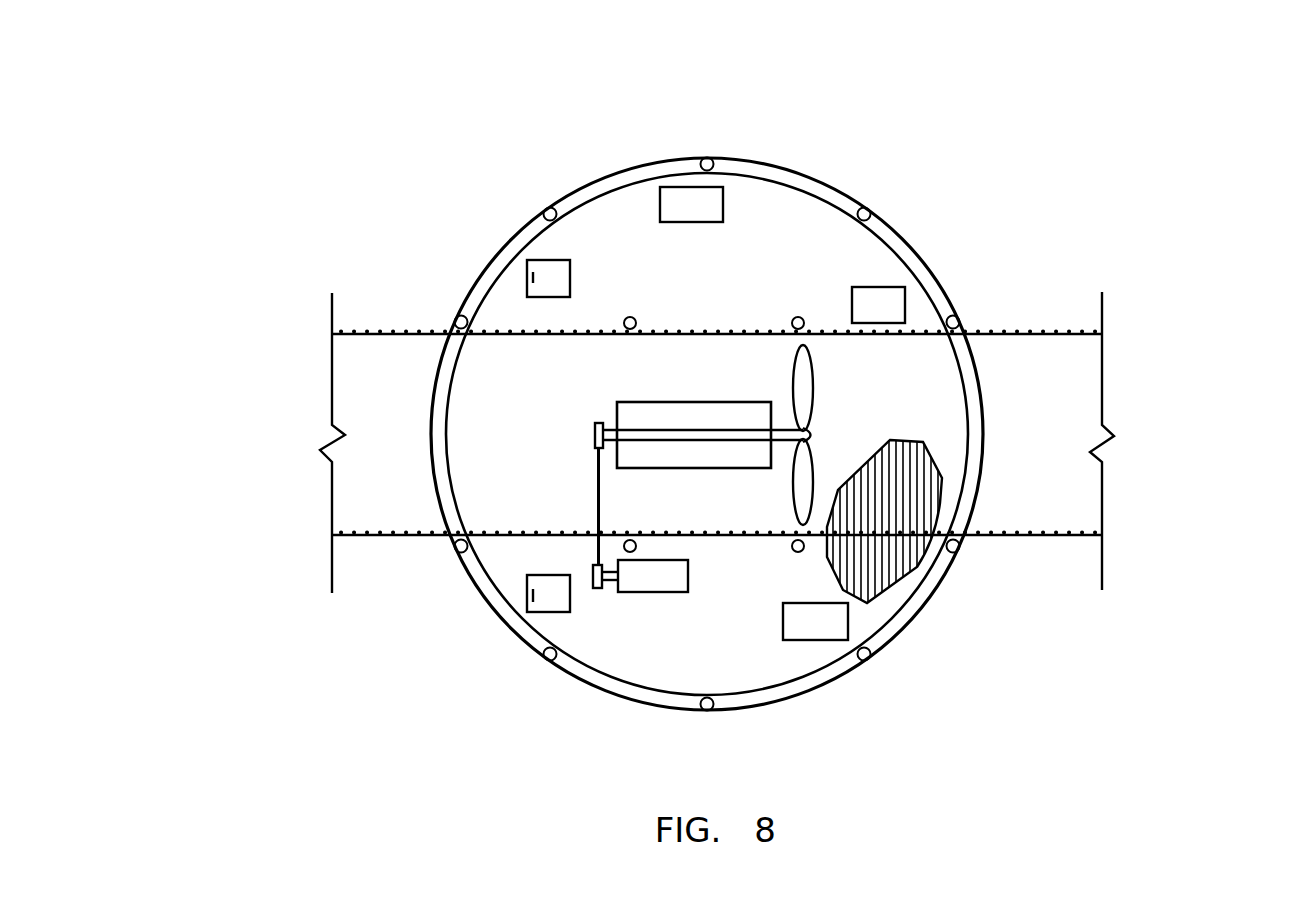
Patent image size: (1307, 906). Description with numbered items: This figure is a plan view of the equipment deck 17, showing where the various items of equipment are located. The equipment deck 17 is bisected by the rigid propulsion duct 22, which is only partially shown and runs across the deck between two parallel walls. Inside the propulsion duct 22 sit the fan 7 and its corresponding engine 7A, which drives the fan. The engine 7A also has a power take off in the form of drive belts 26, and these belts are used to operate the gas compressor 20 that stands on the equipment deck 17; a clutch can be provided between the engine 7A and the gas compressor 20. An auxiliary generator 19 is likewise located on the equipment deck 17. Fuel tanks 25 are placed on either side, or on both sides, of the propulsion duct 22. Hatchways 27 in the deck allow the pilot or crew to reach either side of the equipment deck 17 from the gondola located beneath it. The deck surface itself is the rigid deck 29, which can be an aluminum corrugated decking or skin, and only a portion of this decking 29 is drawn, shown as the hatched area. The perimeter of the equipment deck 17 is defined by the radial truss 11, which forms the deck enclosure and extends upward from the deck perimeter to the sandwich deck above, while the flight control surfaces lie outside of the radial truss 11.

The fan 7 is at (811, 373).
The engine 7A is at (672, 402).
The radial truss 11 is at (455, 322).
The equipment deck 17 is at (750, 243).
The auxiliary generator 19 is at (877, 297).
The gas compressor 20 is at (660, 595).
The propulsion duct 22 is at (1062, 500).
The fuel tanks 25 is at (707, 157).
The drive belts 26 is at (597, 473).
The hatchways 27 is at (547, 270).
The rigid deck 29 is at (977, 333).